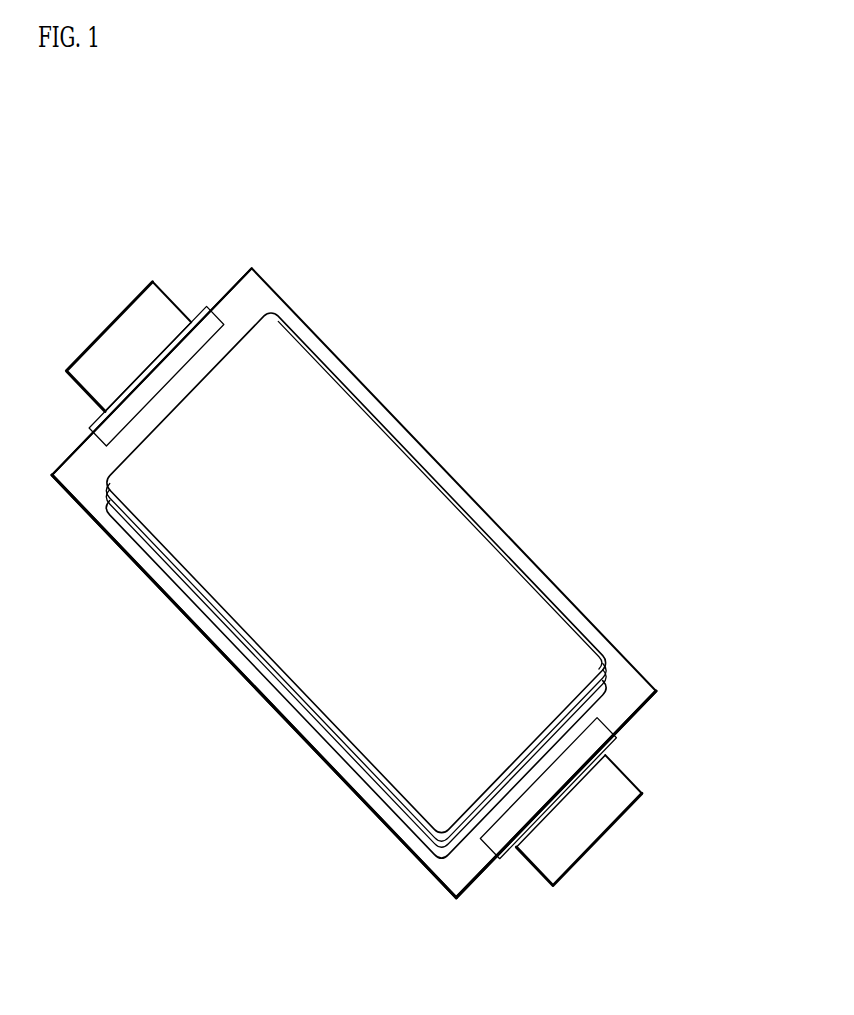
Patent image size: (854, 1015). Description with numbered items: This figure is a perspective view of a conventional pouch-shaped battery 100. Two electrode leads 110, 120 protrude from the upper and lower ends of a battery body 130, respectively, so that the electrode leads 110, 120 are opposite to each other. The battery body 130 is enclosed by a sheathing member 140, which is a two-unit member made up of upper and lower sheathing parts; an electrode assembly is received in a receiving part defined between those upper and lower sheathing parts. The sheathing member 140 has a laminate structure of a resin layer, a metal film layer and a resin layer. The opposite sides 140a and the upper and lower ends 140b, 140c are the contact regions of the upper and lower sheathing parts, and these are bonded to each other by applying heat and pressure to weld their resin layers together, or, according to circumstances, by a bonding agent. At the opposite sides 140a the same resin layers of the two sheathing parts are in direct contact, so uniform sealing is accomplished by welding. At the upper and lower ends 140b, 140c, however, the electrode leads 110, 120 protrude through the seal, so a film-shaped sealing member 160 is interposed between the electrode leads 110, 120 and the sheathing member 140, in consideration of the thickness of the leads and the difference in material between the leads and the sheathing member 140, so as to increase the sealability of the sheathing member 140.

The pouch-shaped battery 100 is at (78, 128).
The electrode lead 110 is at (125, 332).
The electrode lead 120 is at (610, 837).
The battery body 130 is at (433, 497).
The sheathing member 140 is at (642, 672).
The opposite sides 140a is at (252, 292).
The upper end 140b is at (348, 775).
The lower end 140c is at (468, 858).
The film-shaped sealing member 160 is at (615, 738).